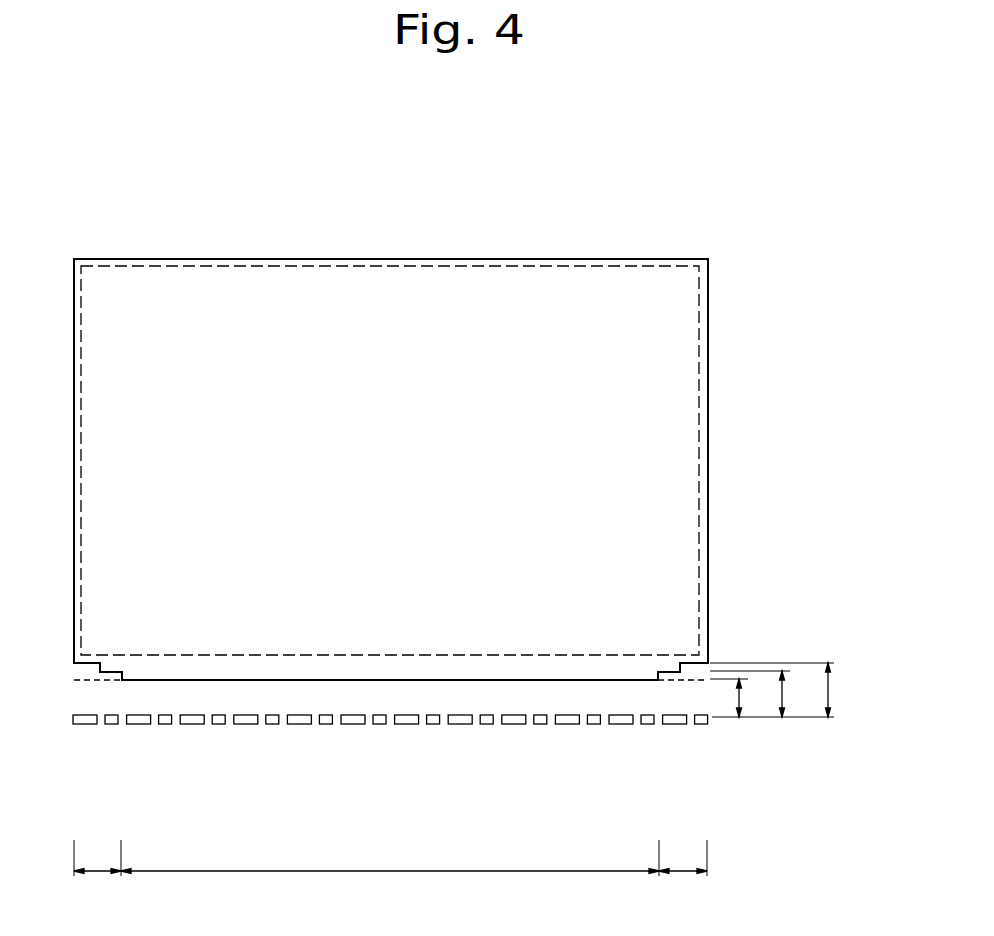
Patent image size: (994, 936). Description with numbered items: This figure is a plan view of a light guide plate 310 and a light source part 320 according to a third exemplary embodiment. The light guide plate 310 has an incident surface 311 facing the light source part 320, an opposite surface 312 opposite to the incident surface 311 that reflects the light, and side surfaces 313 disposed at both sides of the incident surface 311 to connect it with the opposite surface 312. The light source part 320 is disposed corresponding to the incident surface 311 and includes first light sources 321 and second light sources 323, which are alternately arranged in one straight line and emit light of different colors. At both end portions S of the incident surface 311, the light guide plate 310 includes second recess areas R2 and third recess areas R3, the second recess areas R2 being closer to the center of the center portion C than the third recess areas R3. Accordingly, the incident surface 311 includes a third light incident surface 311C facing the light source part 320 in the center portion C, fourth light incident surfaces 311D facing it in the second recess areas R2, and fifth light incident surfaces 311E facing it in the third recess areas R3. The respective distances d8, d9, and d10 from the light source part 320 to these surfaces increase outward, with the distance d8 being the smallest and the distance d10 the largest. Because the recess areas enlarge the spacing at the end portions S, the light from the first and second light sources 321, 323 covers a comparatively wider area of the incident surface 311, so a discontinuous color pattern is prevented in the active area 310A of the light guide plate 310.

The light guide plate 310 is at (649, 258).
The active area 310A is at (543, 258).
The opposite surface 312 is at (437, 258).
The side surfaces 313 is at (710, 466).
The incident surface 311 is at (280, 784).
The third light incident surface 311C is at (233, 681).
The fourth light incident surfaces 311D is at (113, 681).
The fifth light incident surfaces 311E is at (88, 681).
The light source part 320 is at (463, 787).
The first light sources 321 is at (405, 725).
The second light sources 323 is at (432, 725).
The second recess areas R2 is at (666, 681).
The third recess areas R3 is at (693, 681).
The distance d8 is at (751, 698).
The distance d9 is at (794, 694).
The distance d10 is at (844, 690).
The end portions S is at (390, 885).
The center portion C is at (390, 885).